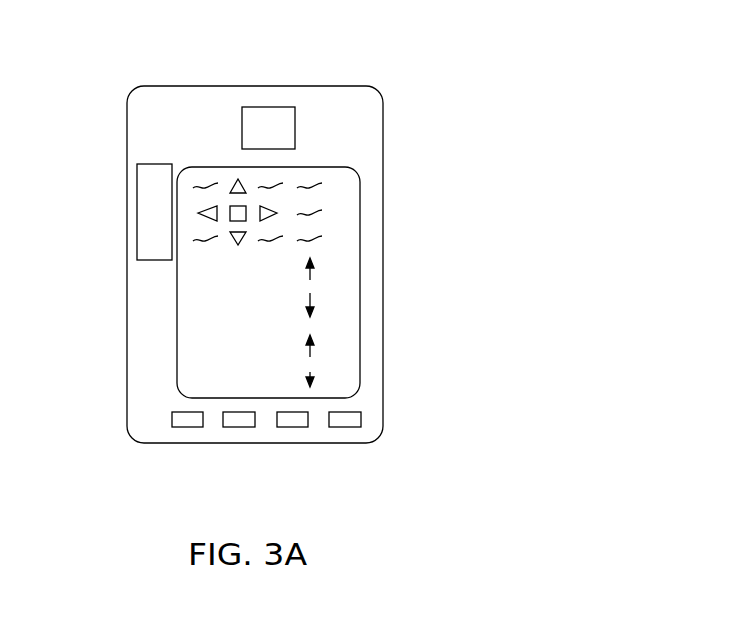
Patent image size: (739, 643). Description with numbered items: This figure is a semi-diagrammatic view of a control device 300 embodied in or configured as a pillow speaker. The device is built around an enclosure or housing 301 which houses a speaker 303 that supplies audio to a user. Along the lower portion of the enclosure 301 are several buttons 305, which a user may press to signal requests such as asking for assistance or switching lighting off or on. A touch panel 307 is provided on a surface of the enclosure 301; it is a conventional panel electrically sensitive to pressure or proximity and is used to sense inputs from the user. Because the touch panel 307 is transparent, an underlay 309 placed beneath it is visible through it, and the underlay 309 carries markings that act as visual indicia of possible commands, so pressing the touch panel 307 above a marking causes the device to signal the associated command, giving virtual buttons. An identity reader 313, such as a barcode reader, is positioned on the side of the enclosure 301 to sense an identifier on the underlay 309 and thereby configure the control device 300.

The control device 300 is at (370, 54).
The housing 301 is at (383, 138).
The speaker 303 is at (265, 107).
The buttons 305 is at (227, 427).
The touch panel 307 is at (360, 250).
The underlay 309 is at (350, 335).
The identity reader 313 is at (137, 225).